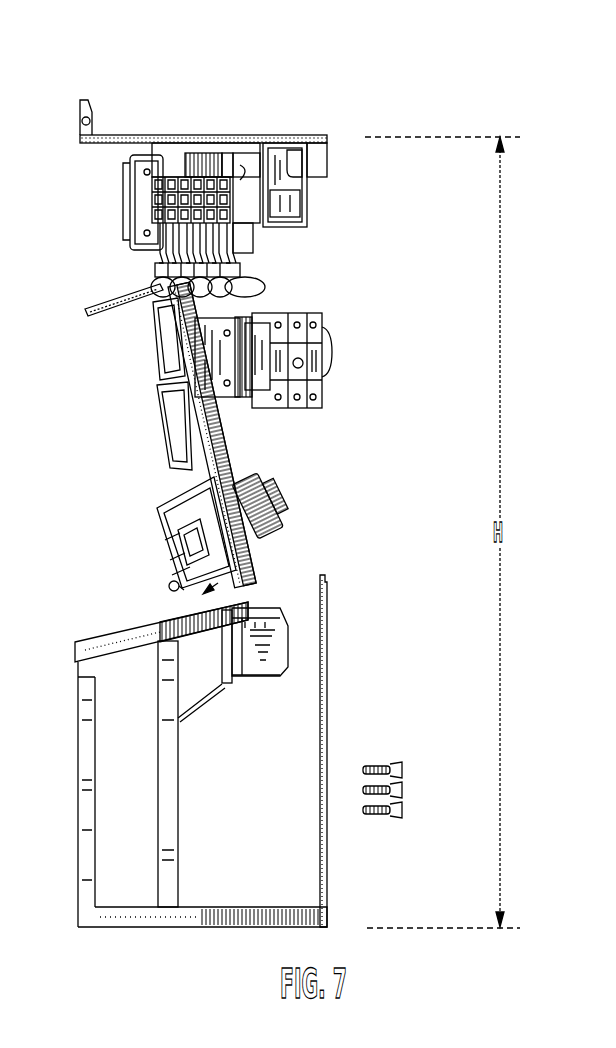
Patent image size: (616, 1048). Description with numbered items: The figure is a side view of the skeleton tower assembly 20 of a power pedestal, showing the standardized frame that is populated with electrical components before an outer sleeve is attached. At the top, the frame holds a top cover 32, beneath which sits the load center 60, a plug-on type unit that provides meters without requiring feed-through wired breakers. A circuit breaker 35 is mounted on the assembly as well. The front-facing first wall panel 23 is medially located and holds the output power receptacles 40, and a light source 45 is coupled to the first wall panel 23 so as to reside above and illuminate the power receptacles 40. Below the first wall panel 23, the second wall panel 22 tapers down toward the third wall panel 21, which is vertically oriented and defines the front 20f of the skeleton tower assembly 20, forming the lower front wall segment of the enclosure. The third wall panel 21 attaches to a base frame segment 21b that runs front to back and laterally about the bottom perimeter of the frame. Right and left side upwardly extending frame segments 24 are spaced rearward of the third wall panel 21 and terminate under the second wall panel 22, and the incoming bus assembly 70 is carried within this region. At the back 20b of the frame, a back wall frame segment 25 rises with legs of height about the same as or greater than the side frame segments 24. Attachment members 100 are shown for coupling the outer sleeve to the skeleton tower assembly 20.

The skeleton tower assembly 20 is at (254, 55).
The output power receptacles 40 is at (3, 68).
The load center 60 is at (200, 130).
The top cover 32 is at (249, 132).
The light source 45 is at (110, 293).
The circuit breaker 35 is at (334, 352).
The first wall panel 23 is at (229, 456).
The second wall panel 22 is at (140, 623).
The front of the skeleton tower assembly 20f is at (53, 703).
The incoming bus assembly 70 is at (289, 645).
The back wall frame segment 25 is at (330, 666).
The back of the skeleton tower frame 20b is at (339, 747).
The attachment members 100 is at (403, 758).
The third wall panel 21 is at (78, 798).
The upwardly extending frame segments 24 is at (172, 829).
The base frame segment 21b is at (138, 917).